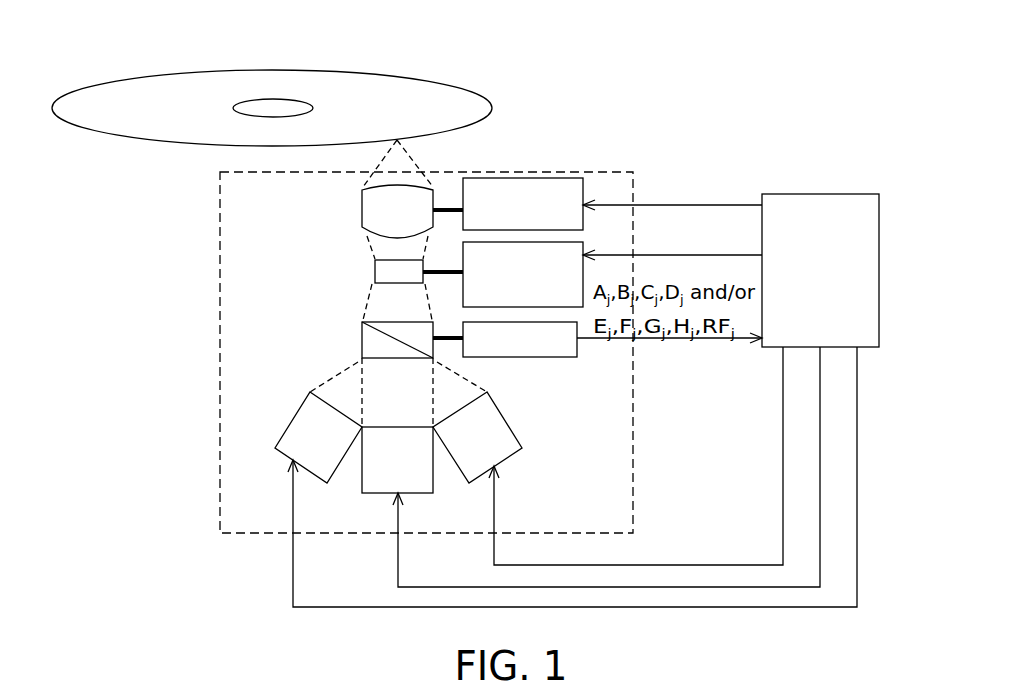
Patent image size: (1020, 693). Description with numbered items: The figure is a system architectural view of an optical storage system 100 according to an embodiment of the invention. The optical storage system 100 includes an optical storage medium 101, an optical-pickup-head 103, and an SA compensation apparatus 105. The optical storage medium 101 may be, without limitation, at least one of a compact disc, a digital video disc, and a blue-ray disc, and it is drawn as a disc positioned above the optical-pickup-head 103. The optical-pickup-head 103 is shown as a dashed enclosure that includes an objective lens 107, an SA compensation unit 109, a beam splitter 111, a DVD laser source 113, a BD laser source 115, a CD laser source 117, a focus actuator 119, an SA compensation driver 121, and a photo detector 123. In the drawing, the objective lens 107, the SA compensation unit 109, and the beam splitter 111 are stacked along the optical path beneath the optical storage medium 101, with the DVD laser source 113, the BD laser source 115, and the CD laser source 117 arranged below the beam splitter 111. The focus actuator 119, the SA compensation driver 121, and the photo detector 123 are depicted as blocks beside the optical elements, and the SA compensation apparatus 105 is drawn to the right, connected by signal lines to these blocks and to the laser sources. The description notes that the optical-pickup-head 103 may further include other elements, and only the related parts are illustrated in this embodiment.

The optical storage system 100 is at (867, 679).
The optical storage medium 101 is at (193, 70).
The optical-pickup-head 103 is at (216, 209).
The SA compensation apparatus 105 is at (879, 273).
The objective lens 107 is at (362, 205).
The SA compensation unit 109 is at (375, 270).
The beam splitter 111 is at (362, 337).
The DVD laser source 113 is at (285, 425).
The BD laser source 115 is at (418, 493).
The CD laser source 117 is at (515, 428).
The focus actuator 119 is at (532, 178).
The SA compensation driver 121 is at (583, 243).
The photo detector 123 is at (513, 357).